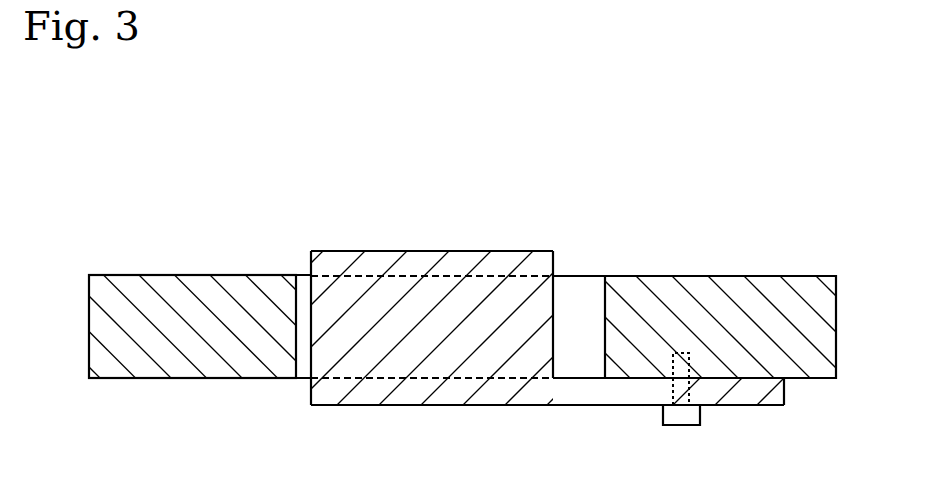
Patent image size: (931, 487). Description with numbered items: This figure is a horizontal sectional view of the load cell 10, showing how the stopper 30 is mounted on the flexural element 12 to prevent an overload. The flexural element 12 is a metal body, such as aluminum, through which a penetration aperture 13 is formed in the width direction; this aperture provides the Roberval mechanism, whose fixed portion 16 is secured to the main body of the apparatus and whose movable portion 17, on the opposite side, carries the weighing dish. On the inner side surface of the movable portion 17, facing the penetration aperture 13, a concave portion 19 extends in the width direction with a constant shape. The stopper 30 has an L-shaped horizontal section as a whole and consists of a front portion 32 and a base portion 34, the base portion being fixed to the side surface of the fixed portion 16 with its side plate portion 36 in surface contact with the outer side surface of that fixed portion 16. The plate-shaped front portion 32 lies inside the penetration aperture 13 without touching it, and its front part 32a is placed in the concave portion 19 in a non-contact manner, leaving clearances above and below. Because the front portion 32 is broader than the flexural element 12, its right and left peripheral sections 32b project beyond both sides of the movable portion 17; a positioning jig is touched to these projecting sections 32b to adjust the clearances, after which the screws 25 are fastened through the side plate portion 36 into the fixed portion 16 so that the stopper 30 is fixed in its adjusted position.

The load cell 10 is at (560, 205).
The flexural element 12 is at (807, 266).
The penetration aperture 13 is at (580, 288).
The fixed portion 16 is at (735, 292).
The movable portion 17 is at (158, 312).
The concave portion 19 is at (303, 276).
The screws 25 is at (663, 415).
The stopper 30 is at (470, 244).
The front portion 32 is at (413, 270).
The front part 32a is at (310, 357).
The peripheral sections 32b is at (348, 249).
The base portion 34 is at (732, 406).
The side plate portion 36 is at (742, 327).